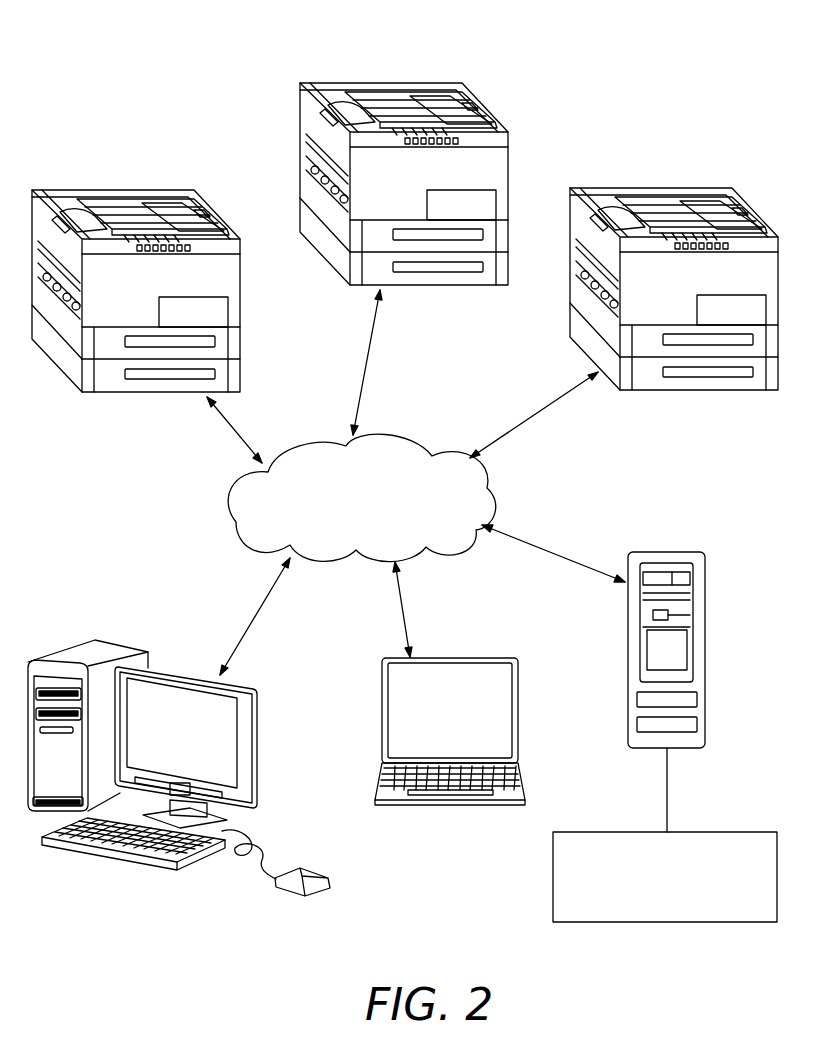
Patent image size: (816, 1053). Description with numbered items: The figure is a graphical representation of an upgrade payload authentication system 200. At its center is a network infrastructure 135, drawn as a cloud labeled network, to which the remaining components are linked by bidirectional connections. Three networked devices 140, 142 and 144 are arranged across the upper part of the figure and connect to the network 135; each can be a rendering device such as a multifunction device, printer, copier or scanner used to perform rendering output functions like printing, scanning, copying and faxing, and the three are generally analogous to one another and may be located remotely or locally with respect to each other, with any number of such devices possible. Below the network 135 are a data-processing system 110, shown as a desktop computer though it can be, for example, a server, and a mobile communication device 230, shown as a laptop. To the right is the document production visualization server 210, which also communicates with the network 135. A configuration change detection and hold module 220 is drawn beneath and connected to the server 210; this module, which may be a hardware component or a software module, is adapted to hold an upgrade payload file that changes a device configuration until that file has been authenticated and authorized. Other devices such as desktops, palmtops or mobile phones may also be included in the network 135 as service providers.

The upgrade payload authentication system 200 is at (578, 57).
The networked device 140 is at (380, 82).
The networked device 142 is at (127, 190).
The networked device 144 is at (695, 187).
The network infrastructure 135 is at (392, 438).
The data-processing system 110 is at (167, 670).
The mobile communication device 230 is at (445, 658).
The document production visualization (DPV) server 210 is at (707, 667).
The configuration change detection and hold module 220 is at (718, 832).